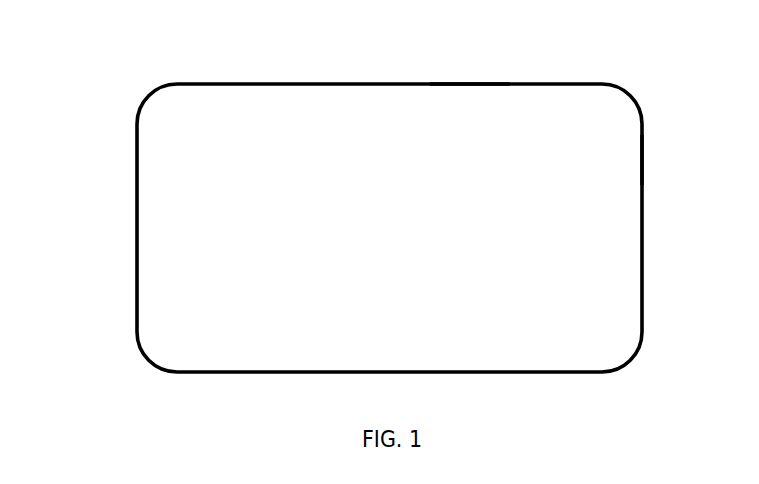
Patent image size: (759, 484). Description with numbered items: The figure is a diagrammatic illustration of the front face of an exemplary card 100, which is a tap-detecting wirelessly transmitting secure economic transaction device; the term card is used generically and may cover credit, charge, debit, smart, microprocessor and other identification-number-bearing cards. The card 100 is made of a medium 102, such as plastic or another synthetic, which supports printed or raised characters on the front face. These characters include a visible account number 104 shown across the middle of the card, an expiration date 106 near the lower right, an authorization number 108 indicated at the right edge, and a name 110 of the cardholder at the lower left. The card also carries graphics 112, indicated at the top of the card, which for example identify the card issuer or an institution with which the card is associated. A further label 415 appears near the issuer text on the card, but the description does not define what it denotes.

The payment card 100 is at (410, 409).
The card front face 102 is at (194, 164).
The account number 104 is at (222, 205).
The expiration date 106 is at (550, 320).
The card edge 108 is at (644, 158).
The cardholder name 110 is at (181, 317).
The card top edge / magnetic stripe 112 is at (470, 93).
The issuer bank name 415 is at (642, 158).